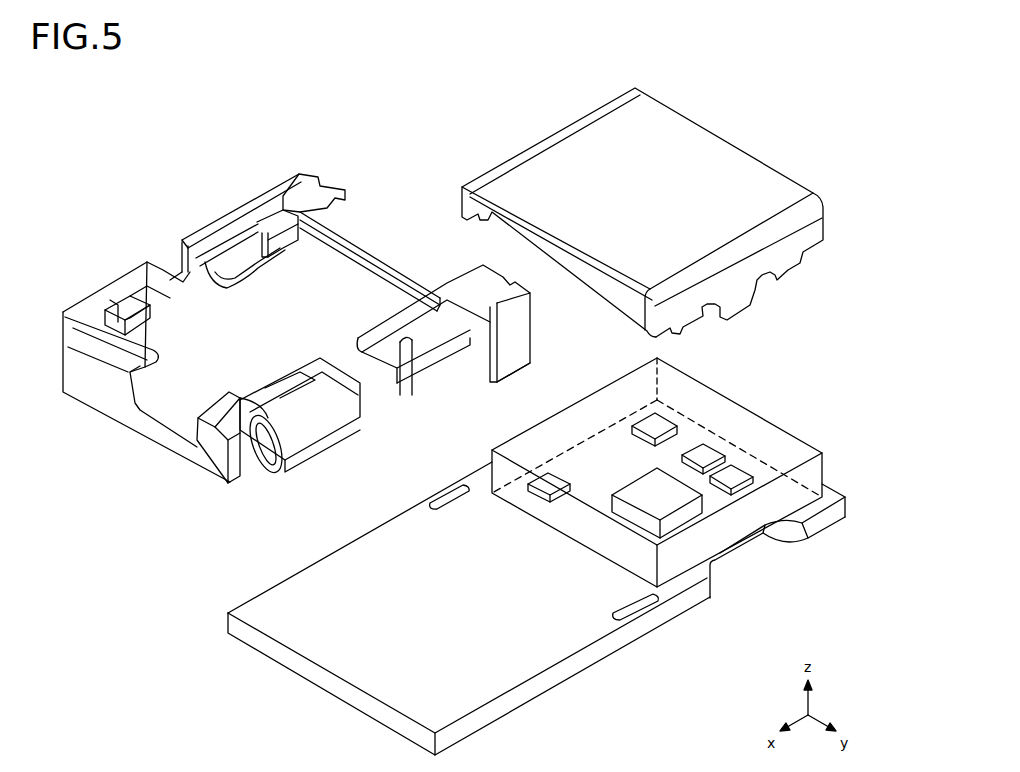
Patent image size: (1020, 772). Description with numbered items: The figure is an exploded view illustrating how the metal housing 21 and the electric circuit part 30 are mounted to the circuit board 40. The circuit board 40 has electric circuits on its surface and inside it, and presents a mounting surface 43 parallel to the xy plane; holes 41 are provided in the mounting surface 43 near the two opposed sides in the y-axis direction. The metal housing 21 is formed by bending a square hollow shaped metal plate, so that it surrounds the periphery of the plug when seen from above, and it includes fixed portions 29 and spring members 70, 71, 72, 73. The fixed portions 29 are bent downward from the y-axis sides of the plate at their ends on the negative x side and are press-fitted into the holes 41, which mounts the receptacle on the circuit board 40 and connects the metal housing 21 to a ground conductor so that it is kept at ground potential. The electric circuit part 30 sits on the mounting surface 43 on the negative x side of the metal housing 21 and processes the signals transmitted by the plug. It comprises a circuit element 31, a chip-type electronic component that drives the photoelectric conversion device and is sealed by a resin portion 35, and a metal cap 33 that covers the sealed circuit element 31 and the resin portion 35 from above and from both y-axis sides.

The metal housing 21 is at (213, 186).
The fixed portions 29 is at (511, 377).
The electric circuit part 30 is at (779, 112).
The circuit element 31 is at (551, 472).
The metal cap 33 is at (677, 130).
The resin portion 35 is at (752, 523).
The circuit board 40 is at (481, 712).
The holes 41 is at (441, 494).
The mounting surface 43 is at (397, 686).
The spring member 70 is at (225, 425).
The spring member 71 is at (418, 343).
The spring member 72 is at (131, 318).
The spring member 73 is at (295, 238).